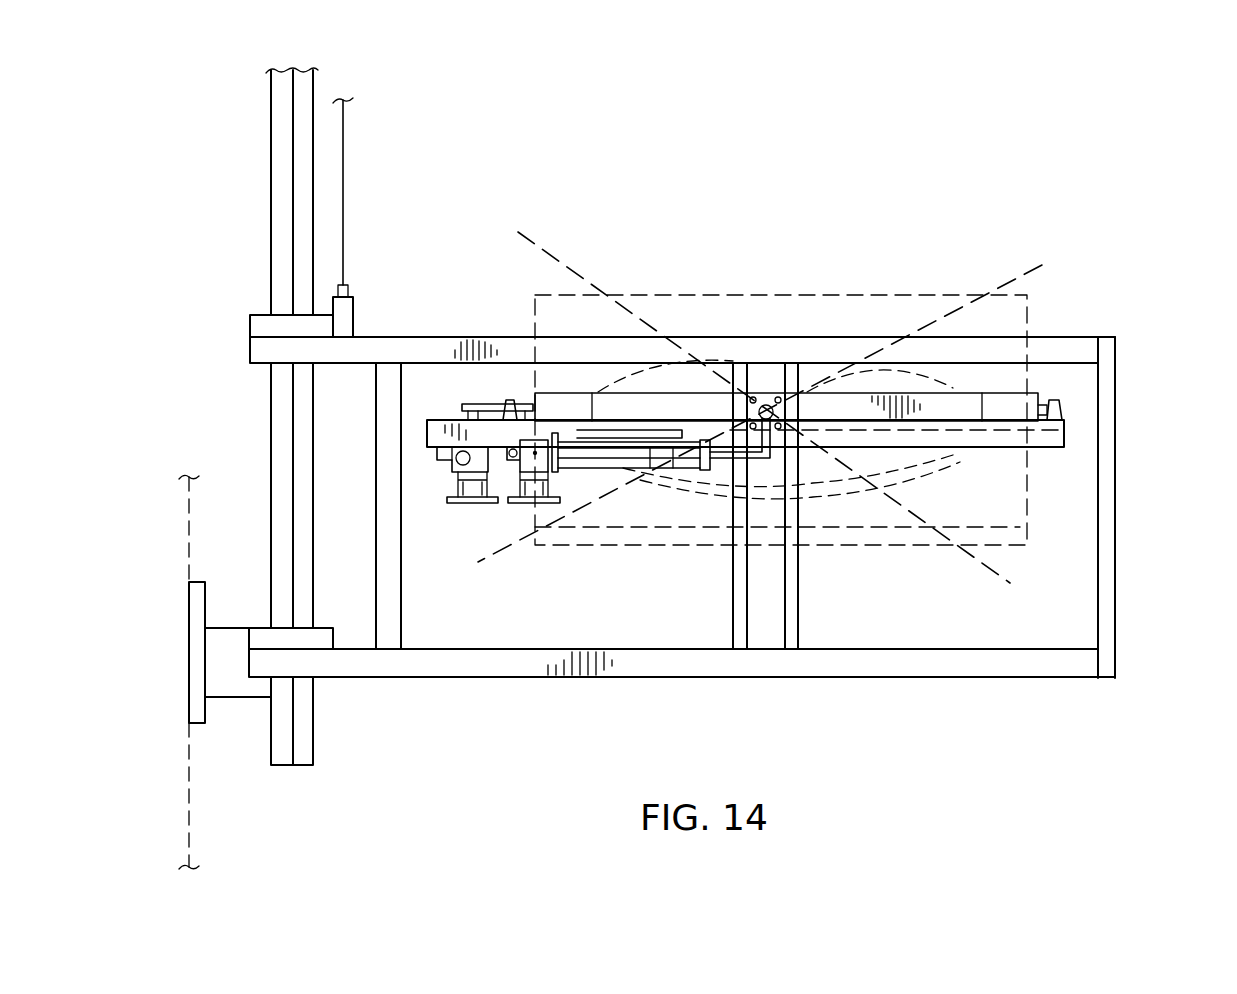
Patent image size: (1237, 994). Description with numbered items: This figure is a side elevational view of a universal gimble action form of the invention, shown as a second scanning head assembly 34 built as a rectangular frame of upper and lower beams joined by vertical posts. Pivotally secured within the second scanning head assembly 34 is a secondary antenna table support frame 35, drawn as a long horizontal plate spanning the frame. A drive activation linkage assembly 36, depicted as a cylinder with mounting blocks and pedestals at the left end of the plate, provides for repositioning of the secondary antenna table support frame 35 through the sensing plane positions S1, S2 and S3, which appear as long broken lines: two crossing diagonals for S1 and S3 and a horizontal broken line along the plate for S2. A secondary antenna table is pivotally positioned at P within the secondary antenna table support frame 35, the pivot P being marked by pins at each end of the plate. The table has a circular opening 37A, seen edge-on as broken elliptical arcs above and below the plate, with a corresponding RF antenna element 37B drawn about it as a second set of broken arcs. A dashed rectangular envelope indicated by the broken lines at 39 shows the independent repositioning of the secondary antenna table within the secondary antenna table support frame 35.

The second scanning head assembly 34 is at (1140, 318).
The secondary antenna table support frame 35 is at (1045, 440).
The drive activation linkage assembly 36 is at (528, 518).
The circular opening 37A is at (1000, 400).
The RF antenna element 37B is at (842, 497).
The broken lines 39 is at (1003, 547).
The pivot P is at (510, 400).
The sensing plane position S1 is at (1020, 272).
The sensing plane position S2 is at (1064, 430).
The sensing plane position S3 is at (995, 578).